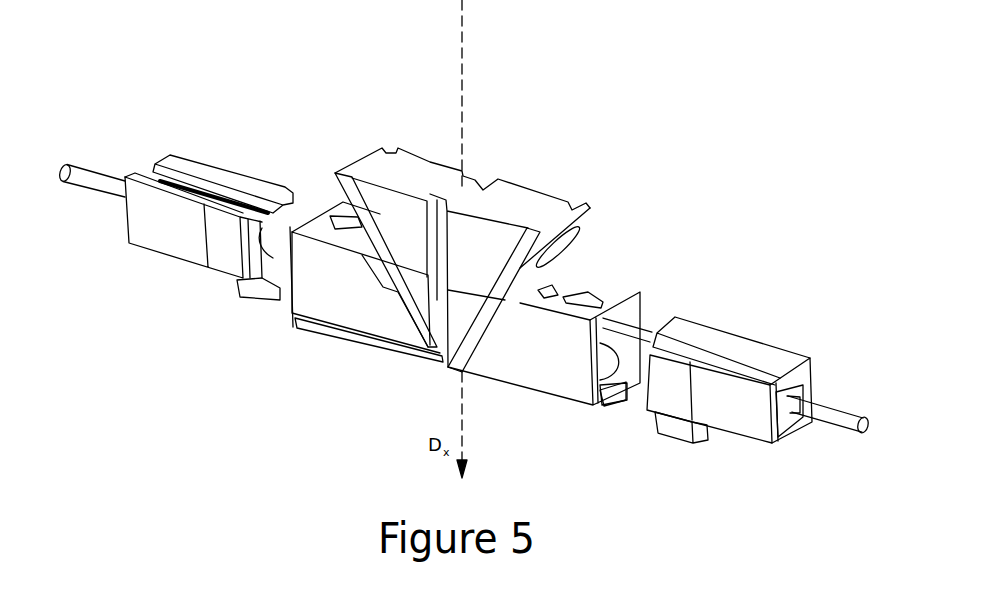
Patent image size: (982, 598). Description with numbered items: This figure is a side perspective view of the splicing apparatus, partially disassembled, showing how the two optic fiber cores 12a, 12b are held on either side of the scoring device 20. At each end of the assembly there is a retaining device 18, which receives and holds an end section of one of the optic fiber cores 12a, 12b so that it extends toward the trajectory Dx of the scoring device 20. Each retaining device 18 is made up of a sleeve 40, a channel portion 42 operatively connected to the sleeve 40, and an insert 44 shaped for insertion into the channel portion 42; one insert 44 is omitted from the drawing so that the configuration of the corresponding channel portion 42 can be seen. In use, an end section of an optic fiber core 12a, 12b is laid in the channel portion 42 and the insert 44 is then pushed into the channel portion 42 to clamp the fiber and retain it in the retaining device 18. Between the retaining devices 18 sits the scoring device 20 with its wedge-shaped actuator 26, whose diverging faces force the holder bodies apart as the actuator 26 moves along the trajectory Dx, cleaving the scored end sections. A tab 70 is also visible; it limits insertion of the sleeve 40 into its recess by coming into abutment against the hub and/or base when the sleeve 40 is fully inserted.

The optic fiber core 12a is at (830, 415).
The optic fiber core 12b is at (77, 180).
The retaining device 18 is at (220, 172).
The scoring device 20 is at (547, 205).
The actuator 26 is at (388, 177).
The sleeve 40 is at (282, 235).
The channel portion 42 is at (161, 172).
The insert 44 is at (705, 338).
The tab 70 is at (693, 437).